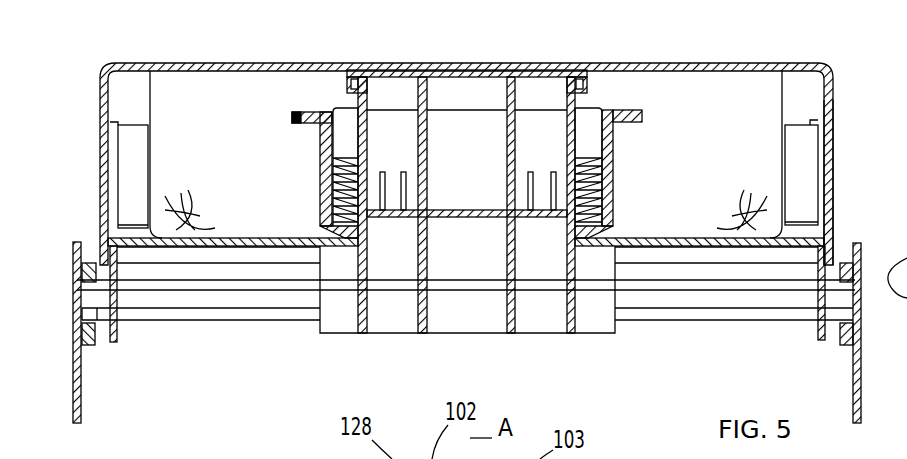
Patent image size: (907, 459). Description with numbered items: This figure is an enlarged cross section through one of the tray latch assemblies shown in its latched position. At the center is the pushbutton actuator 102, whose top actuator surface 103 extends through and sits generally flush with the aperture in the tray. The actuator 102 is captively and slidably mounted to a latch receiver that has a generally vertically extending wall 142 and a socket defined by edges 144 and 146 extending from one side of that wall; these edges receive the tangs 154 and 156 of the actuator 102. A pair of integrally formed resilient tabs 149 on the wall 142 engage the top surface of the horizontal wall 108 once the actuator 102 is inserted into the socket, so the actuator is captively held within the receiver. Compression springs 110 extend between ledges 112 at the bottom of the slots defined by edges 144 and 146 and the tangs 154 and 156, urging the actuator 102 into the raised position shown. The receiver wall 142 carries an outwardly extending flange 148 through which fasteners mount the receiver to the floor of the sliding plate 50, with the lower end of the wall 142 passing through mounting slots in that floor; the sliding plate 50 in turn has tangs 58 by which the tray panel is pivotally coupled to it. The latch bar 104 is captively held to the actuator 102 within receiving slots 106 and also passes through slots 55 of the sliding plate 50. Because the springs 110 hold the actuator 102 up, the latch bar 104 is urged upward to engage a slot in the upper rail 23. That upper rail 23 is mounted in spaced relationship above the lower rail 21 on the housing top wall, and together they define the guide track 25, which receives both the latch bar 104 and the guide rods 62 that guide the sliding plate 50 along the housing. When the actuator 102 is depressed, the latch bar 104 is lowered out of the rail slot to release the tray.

The pushbutton actuator 102 is at (408, 58).
The top actuator surface 103 is at (507, 63).
The vertically extending wall 142 is at (463, 133).
The horizontal wall 108 is at (450, 220).
The resilient tabs 149 is at (545, 190).
The receiving slots 106 is at (433, 277).
The sliding plate 50 is at (650, 230).
The outwardly extending flange 148 is at (140, 125).
The tangs of sliding plate 58 is at (829, 150).
The compression springs 110 is at (320, 168).
The edge of socket 146 is at (296, 112).
The tang of pushbutton actuator 156 is at (347, 107).
The ledges 112 is at (320, 205).
The tang of pushbutton actuator 154 is at (608, 110).
The edge of socket 144 is at (645, 117).
The latch bar 104 is at (280, 285).
The guide rods 62 is at (217, 318).
The slots 55 is at (818, 307).
The upper rail 23 is at (93, 262).
The lower rail 21 is at (88, 345).
The guide track 25 is at (98, 313).